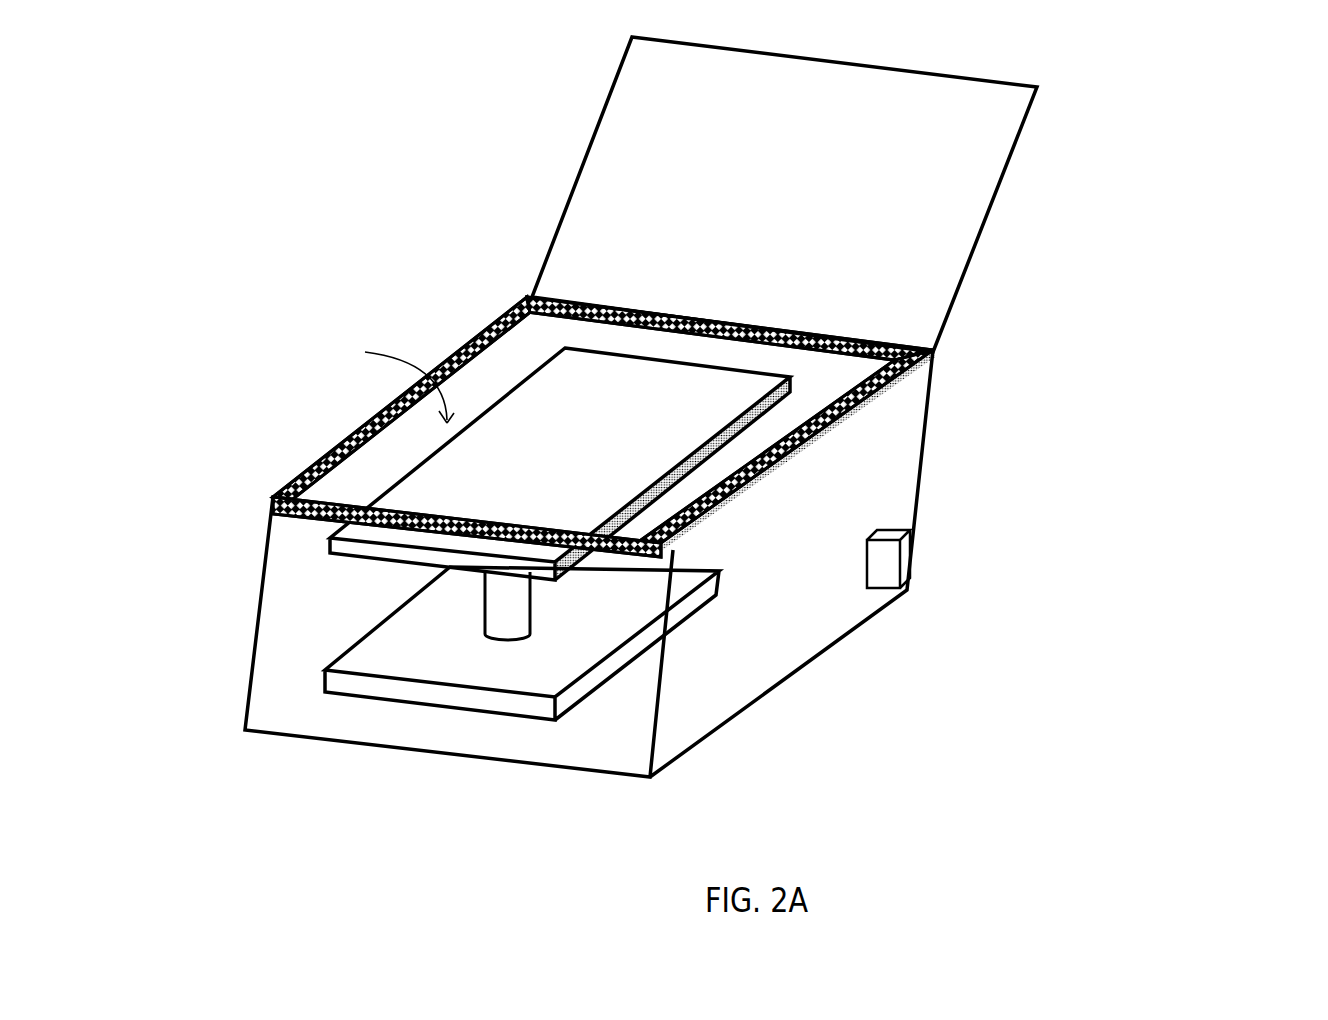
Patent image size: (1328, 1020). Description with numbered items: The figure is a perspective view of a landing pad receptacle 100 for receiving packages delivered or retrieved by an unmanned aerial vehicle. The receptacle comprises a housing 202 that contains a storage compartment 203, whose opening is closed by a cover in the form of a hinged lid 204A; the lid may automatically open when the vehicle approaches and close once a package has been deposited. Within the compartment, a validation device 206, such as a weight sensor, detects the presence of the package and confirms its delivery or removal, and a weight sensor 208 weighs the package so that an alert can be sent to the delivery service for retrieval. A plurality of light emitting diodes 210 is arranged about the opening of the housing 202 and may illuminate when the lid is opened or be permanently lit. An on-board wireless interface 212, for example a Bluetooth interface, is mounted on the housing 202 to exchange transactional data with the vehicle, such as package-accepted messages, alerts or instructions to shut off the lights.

The landing pad receptacle 100 is at (1190, 141).
The housing 202 is at (788, 635).
The storage compartment 203 is at (383, 368).
The hinged lid 204A is at (605, 218).
The validation device 206 is at (463, 672).
The weight sensor 208 is at (535, 423).
The light emitting diodes 210 is at (857, 410).
The wireless interface 212 is at (890, 560).